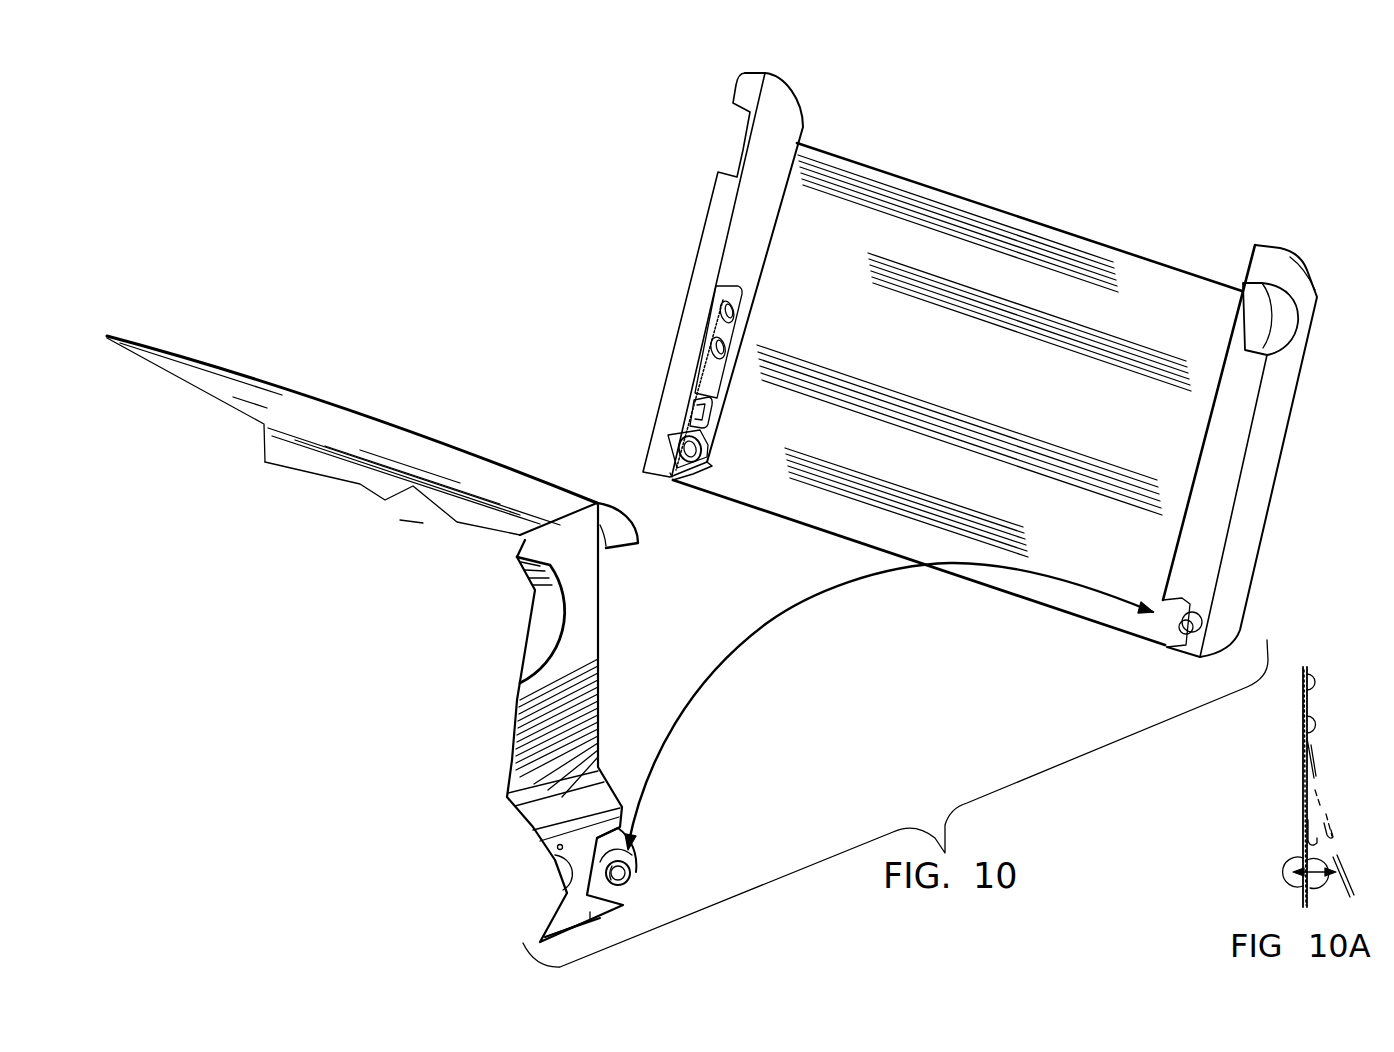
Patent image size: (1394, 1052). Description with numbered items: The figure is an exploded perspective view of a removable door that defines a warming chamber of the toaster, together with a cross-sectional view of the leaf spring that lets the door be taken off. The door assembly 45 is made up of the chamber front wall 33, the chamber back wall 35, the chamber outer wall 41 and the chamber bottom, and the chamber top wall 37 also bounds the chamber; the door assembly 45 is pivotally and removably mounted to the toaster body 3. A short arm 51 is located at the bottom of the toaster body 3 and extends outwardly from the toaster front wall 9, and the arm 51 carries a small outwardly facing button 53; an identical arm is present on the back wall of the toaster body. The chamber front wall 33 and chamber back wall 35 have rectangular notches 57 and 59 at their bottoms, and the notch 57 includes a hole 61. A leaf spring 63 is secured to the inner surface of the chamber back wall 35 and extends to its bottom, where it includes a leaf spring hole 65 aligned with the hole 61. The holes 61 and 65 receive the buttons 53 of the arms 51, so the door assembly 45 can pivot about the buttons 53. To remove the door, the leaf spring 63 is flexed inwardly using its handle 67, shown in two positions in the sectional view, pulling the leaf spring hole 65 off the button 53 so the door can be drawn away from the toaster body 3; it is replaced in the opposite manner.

In FIG. 10, the toaster body 3 is at (252, 403).
In FIG. 10, the toaster front wall 9 is at (570, 625).
In FIG. 10, the chamber front wall 33 is at (1307, 267).
In FIG. 10, the chamber back wall 35 is at (805, 112).
In FIG. 10, the chamber top wall 37 is at (400, 428).
In FIG. 10, the chamber outer wall 41 is at (947, 195).
In FIG. 10, the door assembly 45 is at (1140, 235).
In FIG. 10, the short arm 51 is at (637, 863).
In FIG. 10, the button 53 is at (637, 892).
In FIG. 10, the rectangular notch 57 is at (1163, 628).
In FIG. 10, the rectangular notch 59 is at (670, 457).
In FIG. 10, the hole 61 is at (1180, 630).
In FIG. 10, the leaf spring 63 is at (710, 376).
In FIG. 10A, the leaf spring 63 is at (1310, 700).
In FIG. 10, the leaf spring hole 65 is at (704, 455).
In FIG. 10, the handle 67 is at (702, 418).
In FIG. 10A, the handle 67 is at (1330, 826).